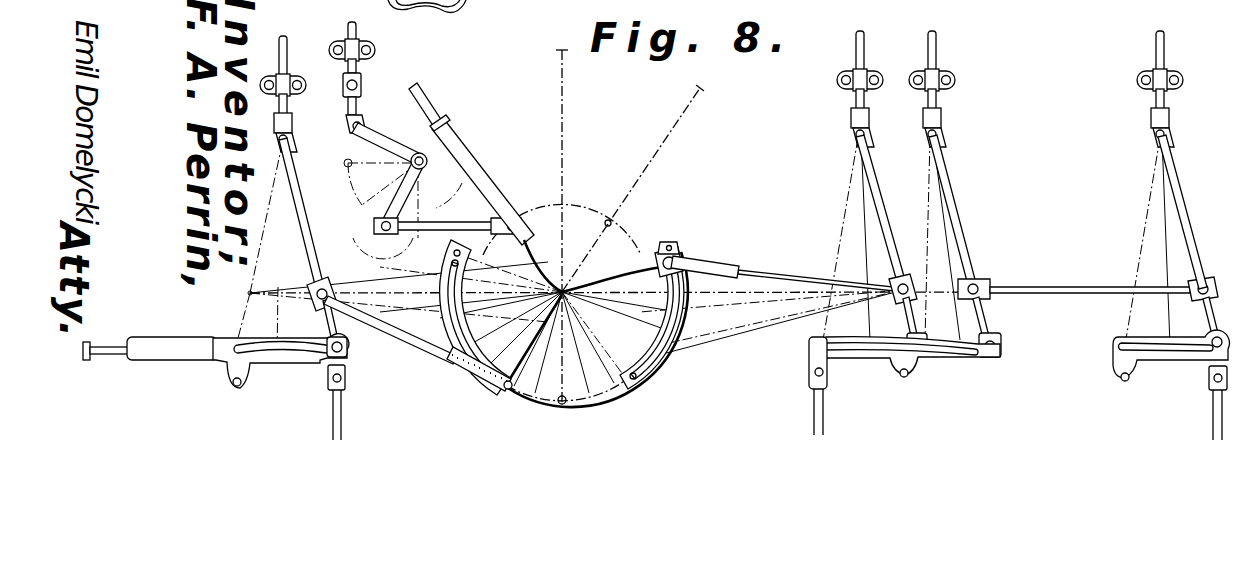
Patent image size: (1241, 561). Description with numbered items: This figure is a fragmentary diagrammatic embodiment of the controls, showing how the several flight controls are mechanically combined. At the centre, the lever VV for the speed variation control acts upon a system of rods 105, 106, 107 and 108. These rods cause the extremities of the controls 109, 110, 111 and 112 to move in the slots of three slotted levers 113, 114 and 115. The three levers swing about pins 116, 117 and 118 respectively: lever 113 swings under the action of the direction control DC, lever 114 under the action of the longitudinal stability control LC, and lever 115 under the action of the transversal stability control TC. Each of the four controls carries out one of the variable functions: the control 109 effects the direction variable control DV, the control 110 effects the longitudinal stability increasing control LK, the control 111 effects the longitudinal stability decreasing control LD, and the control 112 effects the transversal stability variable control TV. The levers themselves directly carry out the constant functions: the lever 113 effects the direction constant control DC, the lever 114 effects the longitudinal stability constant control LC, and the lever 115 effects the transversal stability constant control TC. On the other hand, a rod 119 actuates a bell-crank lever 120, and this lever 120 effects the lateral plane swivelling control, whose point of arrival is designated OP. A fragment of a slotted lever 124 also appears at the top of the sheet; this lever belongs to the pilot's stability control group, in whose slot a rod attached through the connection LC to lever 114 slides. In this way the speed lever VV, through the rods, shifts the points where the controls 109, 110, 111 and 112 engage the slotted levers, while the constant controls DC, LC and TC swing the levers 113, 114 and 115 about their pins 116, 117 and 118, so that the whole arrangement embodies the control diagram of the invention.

The rod 105 is at (425, 352).
The rod 106 is at (772, 276).
The rod 107 is at (975, 280).
The rod 108 is at (1077, 276).
The control 109 is at (318, 240).
The control 110 is at (878, 212).
The control 111 is at (945, 172).
The control 112 is at (1165, 190).
The lever 113 is at (156, 360).
The lever 114 is at (975, 370).
The lever 115 is at (1168, 360).
The pin 116 is at (237, 386).
The pin 117 is at (905, 380).
The pin 118 is at (1120, 383).
The rod 119 is at (518, 192).
The bell-crank lever 120 is at (378, 125).
The slotted lever 124 is at (450, 12).
The direction variable control DV is at (281, 77).
The point of arrival of the lateral plane swivelling control OP is at (350, 66).
The longitudinal stability increasing control LK is at (862, 77).
The longitudinal stability decreasing control LD is at (937, 77).
The transversal stability variable control TV is at (1162, 77).
The speed variation control VV is at (450, 130).
The direction constant control DC is at (358, 394).
The longitudinal stability constant control LC is at (844, 396).
The transversal stability constant control TC is at (1188, 393).